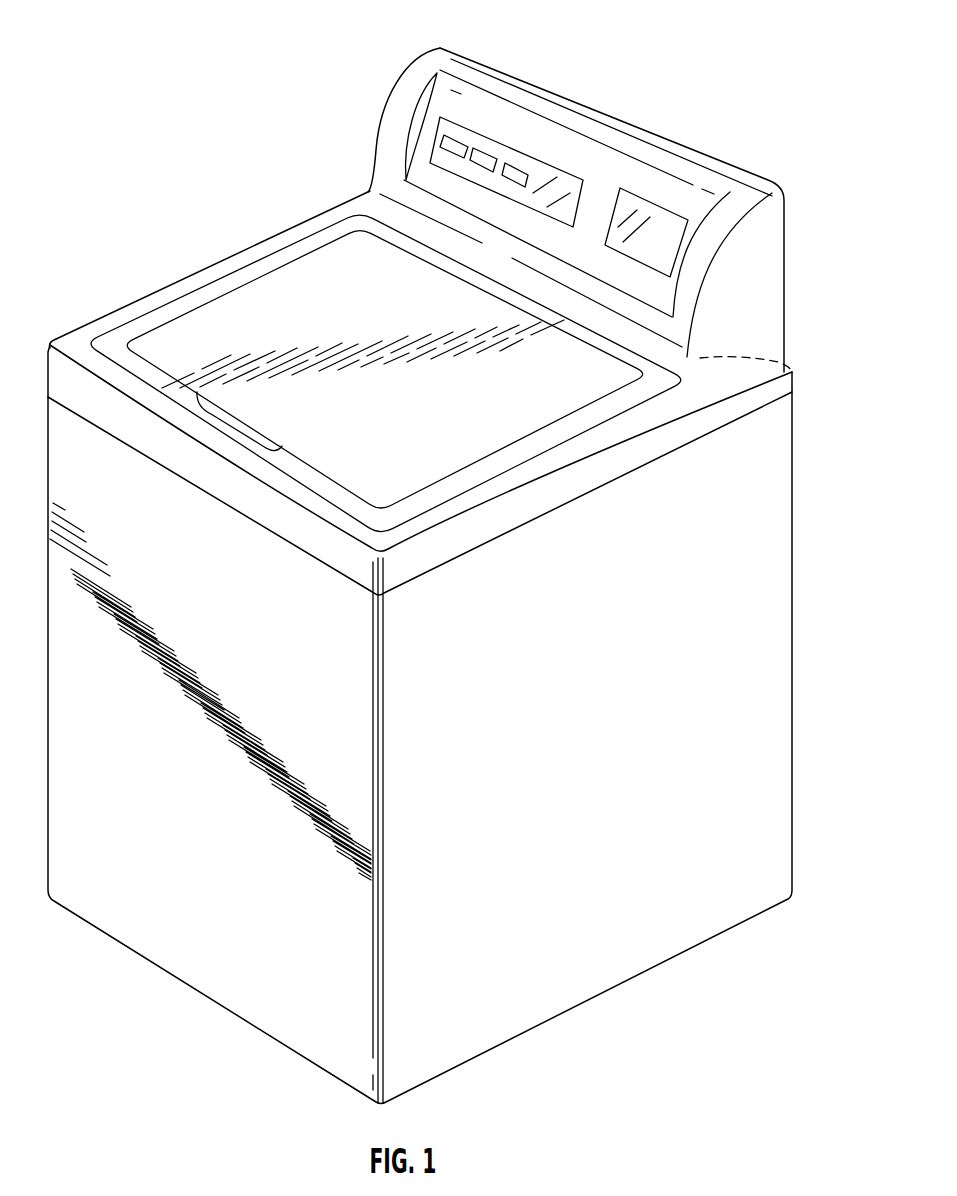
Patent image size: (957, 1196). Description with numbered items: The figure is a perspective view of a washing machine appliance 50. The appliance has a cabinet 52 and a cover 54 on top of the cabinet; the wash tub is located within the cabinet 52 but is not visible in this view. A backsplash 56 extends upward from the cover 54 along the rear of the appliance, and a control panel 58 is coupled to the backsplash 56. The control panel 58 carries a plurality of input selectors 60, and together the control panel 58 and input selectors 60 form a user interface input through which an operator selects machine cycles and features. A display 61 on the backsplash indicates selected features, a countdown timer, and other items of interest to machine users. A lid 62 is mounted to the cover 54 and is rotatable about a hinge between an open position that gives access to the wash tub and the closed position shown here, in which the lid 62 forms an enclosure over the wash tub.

The washing machine appliance 50 is at (814, 489).
The cabinet 52 is at (772, 622).
The cover 54 is at (153, 315).
The backsplash 56 is at (606, 178).
The control panel 58 is at (547, 162).
The input selectors 60 is at (522, 168).
The display 61 is at (670, 220).
The lid 62 is at (328, 292).